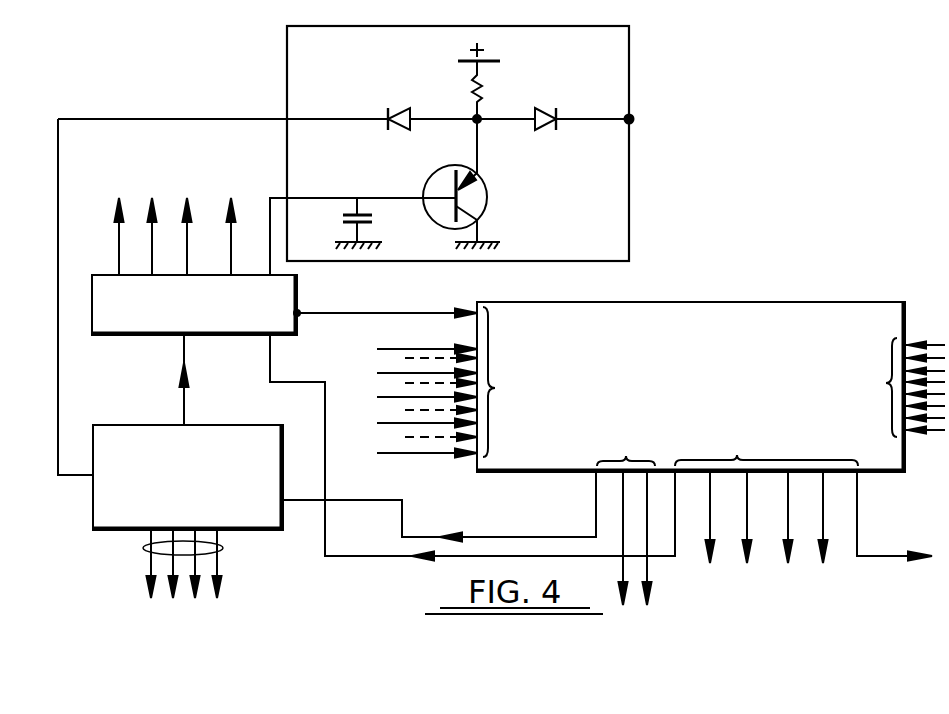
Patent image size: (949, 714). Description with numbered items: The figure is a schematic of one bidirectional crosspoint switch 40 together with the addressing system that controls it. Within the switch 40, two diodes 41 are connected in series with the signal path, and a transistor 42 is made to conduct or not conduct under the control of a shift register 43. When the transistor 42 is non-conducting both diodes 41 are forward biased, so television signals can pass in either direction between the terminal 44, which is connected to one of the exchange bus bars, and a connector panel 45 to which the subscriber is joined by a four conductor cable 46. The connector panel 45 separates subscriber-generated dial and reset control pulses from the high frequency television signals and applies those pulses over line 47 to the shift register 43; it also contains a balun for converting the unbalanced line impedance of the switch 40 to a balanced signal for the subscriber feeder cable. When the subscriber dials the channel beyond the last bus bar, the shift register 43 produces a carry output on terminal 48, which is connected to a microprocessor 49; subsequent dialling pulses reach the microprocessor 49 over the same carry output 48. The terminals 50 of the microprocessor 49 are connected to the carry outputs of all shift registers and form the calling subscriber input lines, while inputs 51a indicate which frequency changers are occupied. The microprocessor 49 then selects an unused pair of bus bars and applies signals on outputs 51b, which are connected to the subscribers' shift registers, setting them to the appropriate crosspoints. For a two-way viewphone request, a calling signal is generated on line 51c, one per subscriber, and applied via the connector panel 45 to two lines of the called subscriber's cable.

The bidirectional crosspoint switch 40 is at (285, 88).
The diodes 41 is at (398, 112).
The transistor 42 is at (440, 183).
The shift register 43 is at (108, 280).
The terminal 44 is at (632, 117).
The connector panel 45 is at (113, 512).
The four conductor cable 46 is at (223, 549).
The line 47 is at (182, 405).
The carry output terminal 48 is at (299, 318).
The microprocessor 49 is at (568, 452).
The terminals 50 is at (450, 382).
The inputs 51a is at (893, 387).
The outputs 51b is at (803, 496).
The line 51c is at (626, 518).